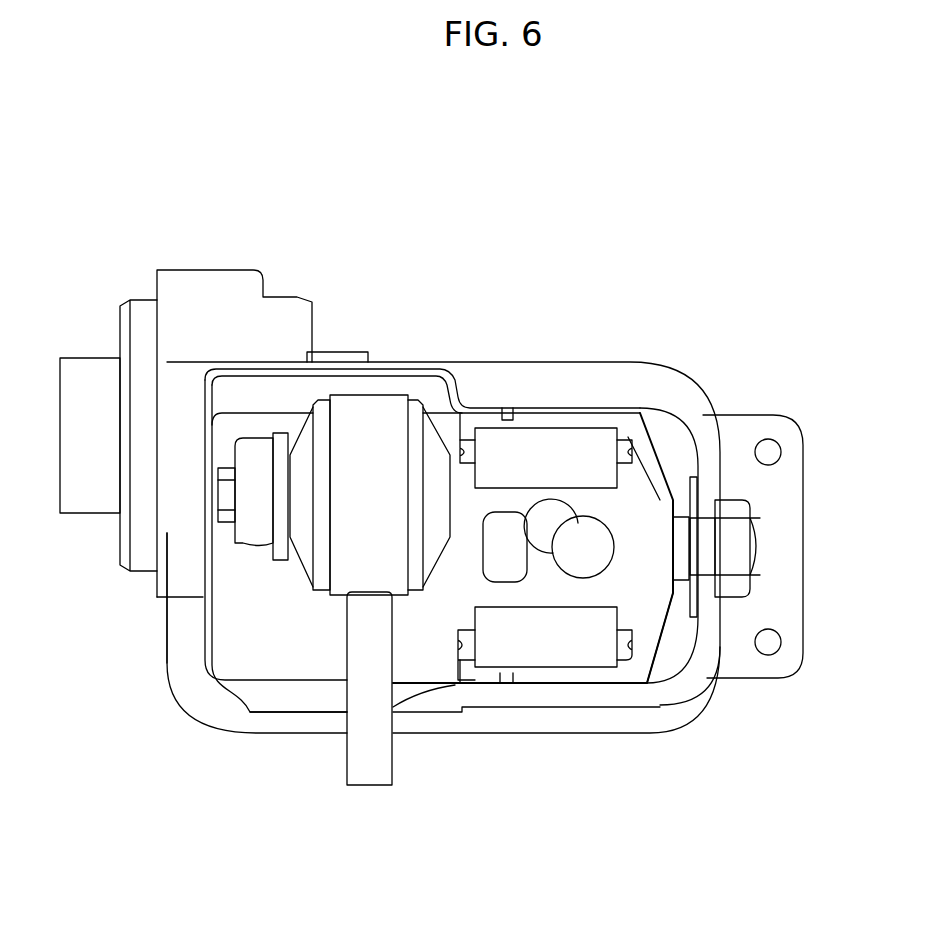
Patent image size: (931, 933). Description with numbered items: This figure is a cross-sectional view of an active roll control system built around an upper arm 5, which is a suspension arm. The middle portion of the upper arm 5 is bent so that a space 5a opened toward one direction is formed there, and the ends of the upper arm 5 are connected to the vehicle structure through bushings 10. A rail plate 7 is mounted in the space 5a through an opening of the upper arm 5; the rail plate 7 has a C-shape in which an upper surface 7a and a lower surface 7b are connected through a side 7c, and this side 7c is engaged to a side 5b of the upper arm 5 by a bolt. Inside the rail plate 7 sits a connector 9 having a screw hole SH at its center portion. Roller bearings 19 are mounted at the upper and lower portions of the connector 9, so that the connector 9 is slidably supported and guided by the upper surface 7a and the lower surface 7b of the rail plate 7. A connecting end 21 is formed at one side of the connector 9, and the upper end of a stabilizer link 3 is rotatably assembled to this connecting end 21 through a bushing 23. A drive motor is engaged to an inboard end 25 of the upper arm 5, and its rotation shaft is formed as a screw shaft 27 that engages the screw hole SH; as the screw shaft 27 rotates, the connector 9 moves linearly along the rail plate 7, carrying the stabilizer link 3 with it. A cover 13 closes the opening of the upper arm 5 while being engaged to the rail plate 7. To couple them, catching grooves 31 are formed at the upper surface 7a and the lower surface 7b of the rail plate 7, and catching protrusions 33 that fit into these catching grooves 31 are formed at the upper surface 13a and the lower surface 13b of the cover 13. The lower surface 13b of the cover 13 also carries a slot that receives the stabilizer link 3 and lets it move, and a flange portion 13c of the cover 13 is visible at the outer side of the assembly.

The stabilizer link 3 is at (358, 757).
The upper arm 5 is at (416, 365).
The space 5a is at (675, 448).
The side of the upper arm 5b is at (707, 482).
The rail plate 7 is at (640, 410).
The upper surface of the rail plate 7a is at (584, 422).
The lower surface of the rail plate 7b is at (602, 684).
The side of the rail plate 7c is at (668, 477).
The connector 9 is at (625, 575).
The bushing 10 is at (122, 332).
The cover 13 is at (228, 617).
The upper surface of the cover 13a is at (383, 372).
The lower surface of the cover 13b is at (283, 698).
The housing flange 13c is at (207, 563).
The roller bearing 19 is at (549, 460).
The connecting end 21 is at (227, 495).
The bushing 23 is at (327, 432).
The inboard end of the upper arm 25 is at (775, 517).
The screw shaft 27 is at (628, 437).
The catching groove 31 is at (490, 418).
The catching protrusion 33 is at (508, 410).
The screw hole SH is at (565, 552).